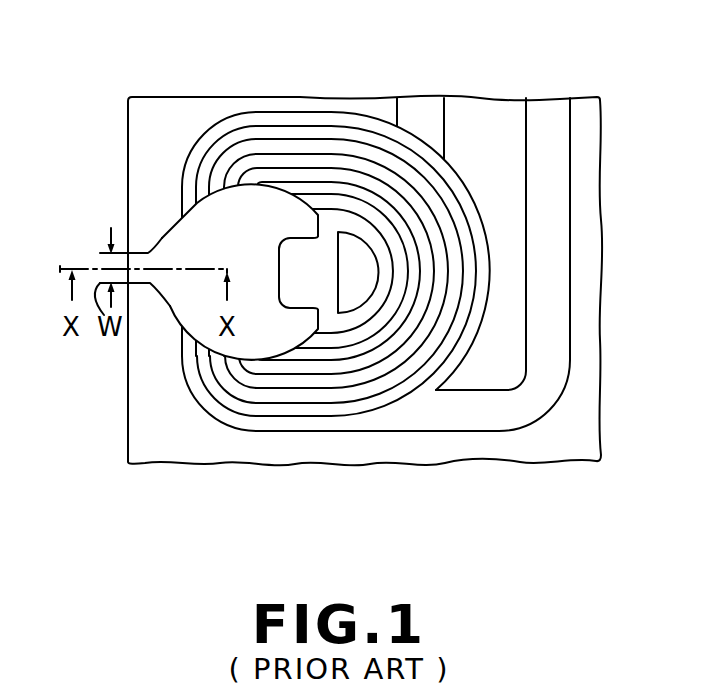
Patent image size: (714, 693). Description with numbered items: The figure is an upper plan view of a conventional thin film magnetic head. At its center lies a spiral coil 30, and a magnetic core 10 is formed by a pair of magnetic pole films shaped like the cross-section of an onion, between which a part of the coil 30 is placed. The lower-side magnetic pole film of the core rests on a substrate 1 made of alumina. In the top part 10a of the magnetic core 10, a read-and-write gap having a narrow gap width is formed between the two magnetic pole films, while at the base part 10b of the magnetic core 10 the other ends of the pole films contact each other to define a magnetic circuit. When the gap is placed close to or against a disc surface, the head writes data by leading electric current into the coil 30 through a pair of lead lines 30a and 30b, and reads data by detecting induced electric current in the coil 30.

The substrate 1 is at (143, 431).
The magnetic core 10 is at (178, 212).
The top part of the magnetic core 10a is at (158, 251).
The base part of the magnetic core 10b is at (302, 288).
The coil 30 is at (208, 133).
The lead line 30a is at (422, 115).
The lead line 30b is at (548, 123).